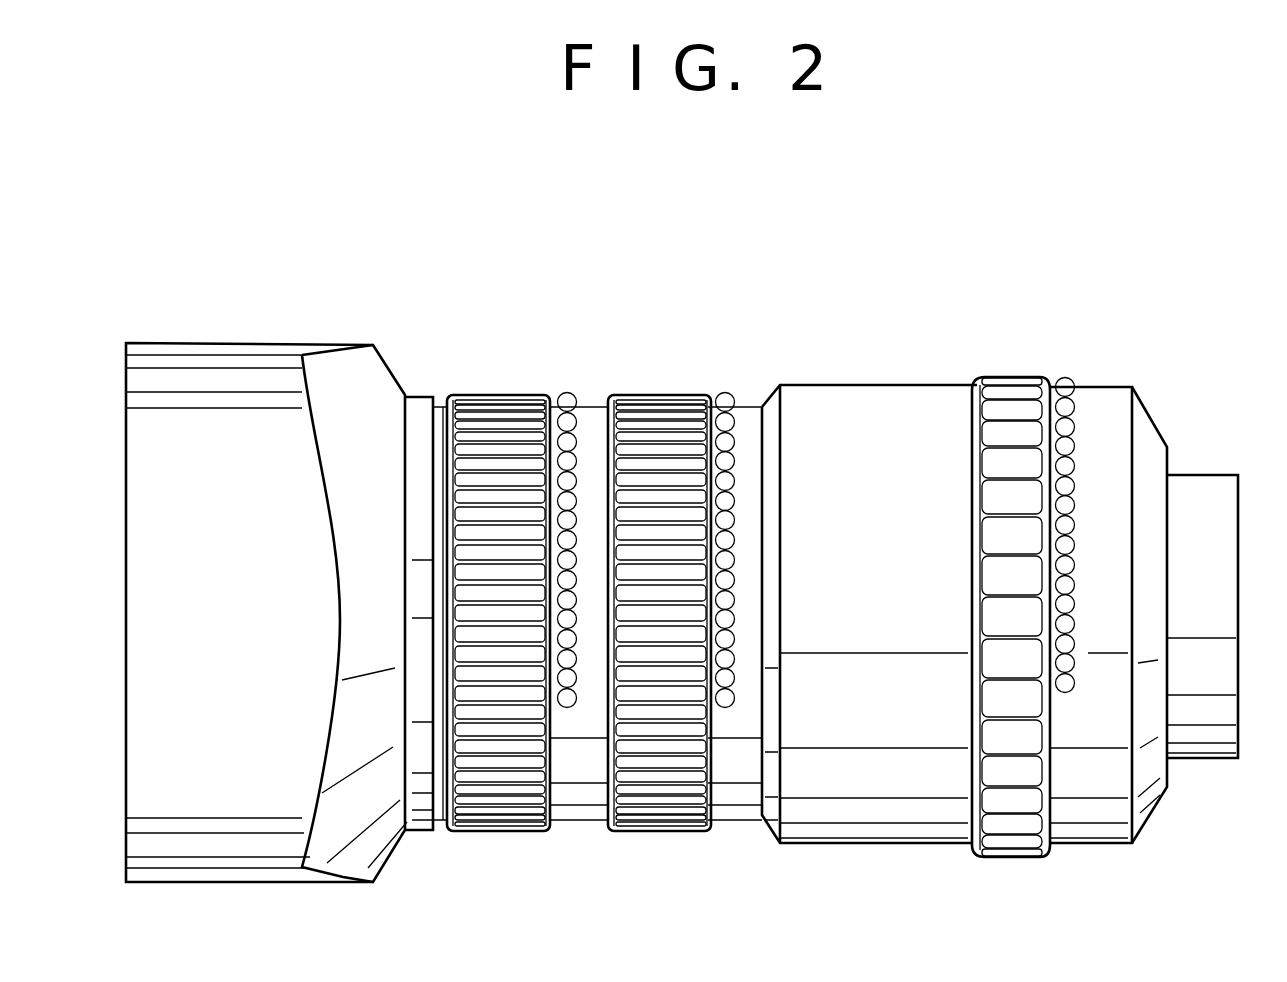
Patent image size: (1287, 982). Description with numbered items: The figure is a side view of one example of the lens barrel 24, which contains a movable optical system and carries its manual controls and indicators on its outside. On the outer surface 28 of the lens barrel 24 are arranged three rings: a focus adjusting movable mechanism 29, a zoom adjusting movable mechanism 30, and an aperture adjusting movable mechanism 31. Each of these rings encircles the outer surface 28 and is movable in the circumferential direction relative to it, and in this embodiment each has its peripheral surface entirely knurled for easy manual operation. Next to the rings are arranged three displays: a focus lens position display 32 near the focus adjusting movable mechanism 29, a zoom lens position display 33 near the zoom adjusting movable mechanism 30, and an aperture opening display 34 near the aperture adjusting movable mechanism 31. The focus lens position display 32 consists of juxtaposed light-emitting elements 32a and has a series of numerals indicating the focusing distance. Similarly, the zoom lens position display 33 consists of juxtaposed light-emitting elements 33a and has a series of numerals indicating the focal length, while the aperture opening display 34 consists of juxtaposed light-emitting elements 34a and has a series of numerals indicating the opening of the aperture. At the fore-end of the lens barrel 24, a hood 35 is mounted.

The lens barrel 24 is at (835, 550).
The outer surface of the lens barrel 28 is at (865, 397).
The focus adjusting movable mechanism 29 is at (503, 397).
The zoom adjusting movable mechanism 30 is at (660, 397).
The aperture adjusting movable mechanism 31 is at (1008, 387).
The focus lens position display 32 is at (586, 489).
The light-emitting elements 32a is at (568, 395).
The zoom lens position display 33 is at (746, 492).
The light-emitting elements 33a is at (723, 395).
The aperture opening display 34 is at (1086, 472).
The light-emitting elements 34a is at (1065, 383).
The hood 35 is at (227, 360).